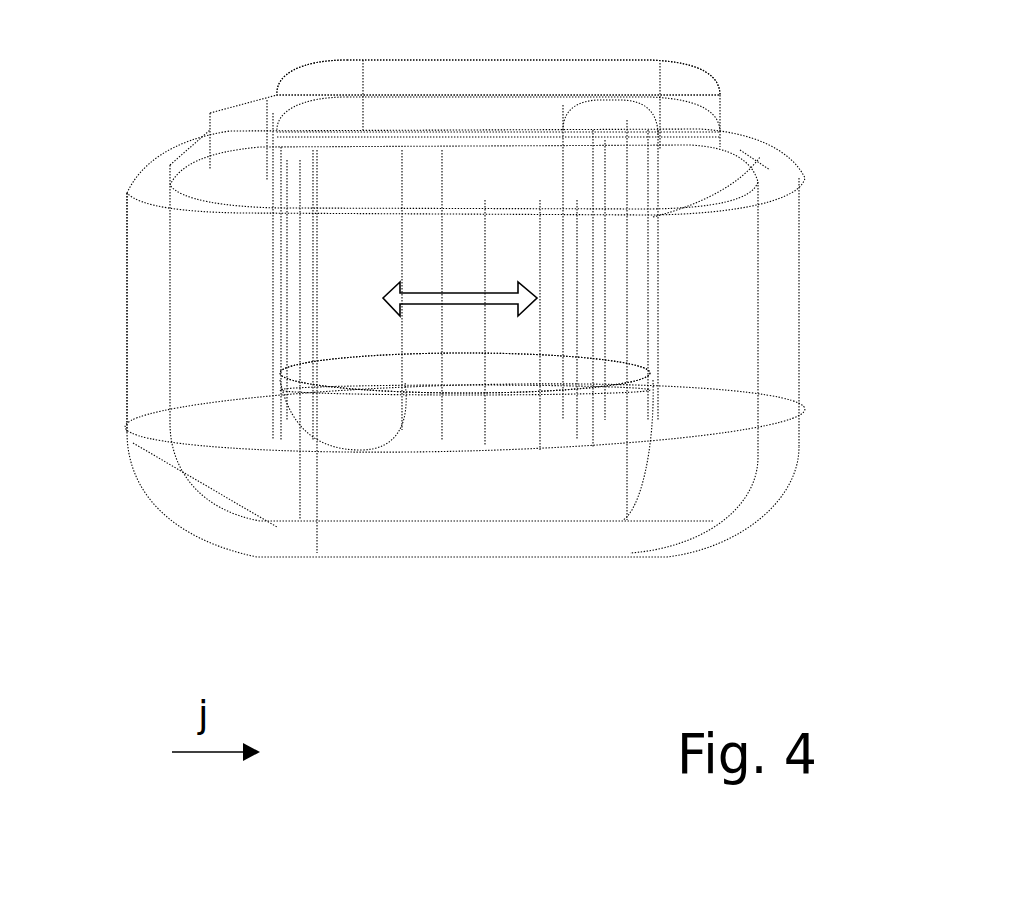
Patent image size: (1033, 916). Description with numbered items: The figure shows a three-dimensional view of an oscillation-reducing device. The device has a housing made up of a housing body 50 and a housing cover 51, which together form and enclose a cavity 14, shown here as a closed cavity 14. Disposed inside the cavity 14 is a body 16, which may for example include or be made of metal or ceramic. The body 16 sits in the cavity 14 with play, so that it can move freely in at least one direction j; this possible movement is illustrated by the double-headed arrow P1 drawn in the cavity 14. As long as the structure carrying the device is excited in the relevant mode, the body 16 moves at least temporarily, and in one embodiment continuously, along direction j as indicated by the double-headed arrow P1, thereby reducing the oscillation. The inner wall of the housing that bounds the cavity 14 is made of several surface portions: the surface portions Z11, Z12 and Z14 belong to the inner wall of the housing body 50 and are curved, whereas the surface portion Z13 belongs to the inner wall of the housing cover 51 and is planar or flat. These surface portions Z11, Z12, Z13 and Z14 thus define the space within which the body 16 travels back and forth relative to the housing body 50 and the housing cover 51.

The housing cover 51 is at (243, 123).
The surface portion of the inner wall of the housing cover Z13 is at (530, 183).
The surface portion of the inner wall of the housing body Z14 is at (635, 283).
The surface portion of the inner wall of the housing body Z12 is at (320, 249).
The body 16 is at (550, 320).
The housing body 50 is at (212, 463).
The double-headed arrow P1 is at (453, 294).
The surface portion of the inner wall of the housing body Z11 is at (538, 419).
The cavity 14 is at (612, 392).